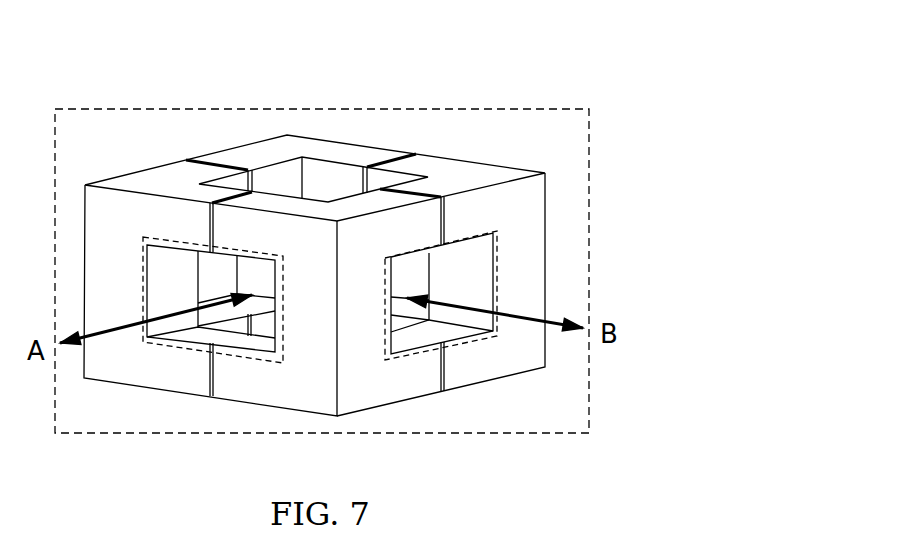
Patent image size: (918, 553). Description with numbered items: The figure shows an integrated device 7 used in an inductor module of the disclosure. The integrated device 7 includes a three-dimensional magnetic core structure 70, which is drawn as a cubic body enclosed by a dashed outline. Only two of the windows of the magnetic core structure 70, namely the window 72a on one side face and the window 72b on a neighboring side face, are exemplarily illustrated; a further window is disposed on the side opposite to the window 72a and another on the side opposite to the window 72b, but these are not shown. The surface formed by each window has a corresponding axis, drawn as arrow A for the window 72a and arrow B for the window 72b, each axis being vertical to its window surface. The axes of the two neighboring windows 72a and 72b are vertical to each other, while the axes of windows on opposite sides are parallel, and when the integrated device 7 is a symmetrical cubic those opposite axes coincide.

The integrated device 7 is at (499, 44).
The three-dimensional magnetic core structure 70 is at (542, 108).
The window 72a is at (143, 277).
The window 72b is at (498, 263).